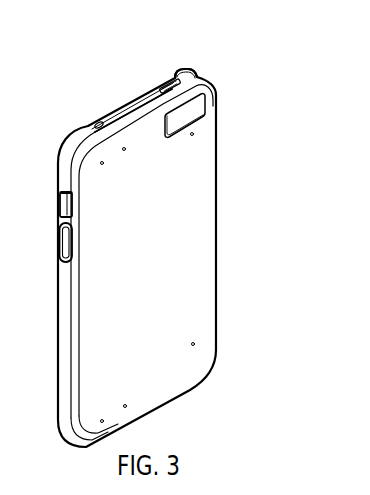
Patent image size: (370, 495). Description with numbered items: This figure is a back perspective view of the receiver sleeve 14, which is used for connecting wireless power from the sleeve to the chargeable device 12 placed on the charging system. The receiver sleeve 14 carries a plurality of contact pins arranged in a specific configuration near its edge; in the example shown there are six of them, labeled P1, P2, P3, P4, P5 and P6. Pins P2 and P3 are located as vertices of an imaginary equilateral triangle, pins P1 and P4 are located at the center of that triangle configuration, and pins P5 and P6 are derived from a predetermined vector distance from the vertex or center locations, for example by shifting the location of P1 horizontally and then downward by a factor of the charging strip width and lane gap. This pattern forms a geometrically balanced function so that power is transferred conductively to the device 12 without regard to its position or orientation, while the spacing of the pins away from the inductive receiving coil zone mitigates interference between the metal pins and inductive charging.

The device 12 is at (110, 102).
The receiver sleeve 14 is at (200, 60).
The contact pin P1 is at (126, 150).
The contact pin P2 is at (104, 164).
The contact pin P3 is at (104, 420).
The contact pin P4 is at (126, 406).
The contact pin P5 is at (194, 134).
The contact pin P6 is at (194, 344).